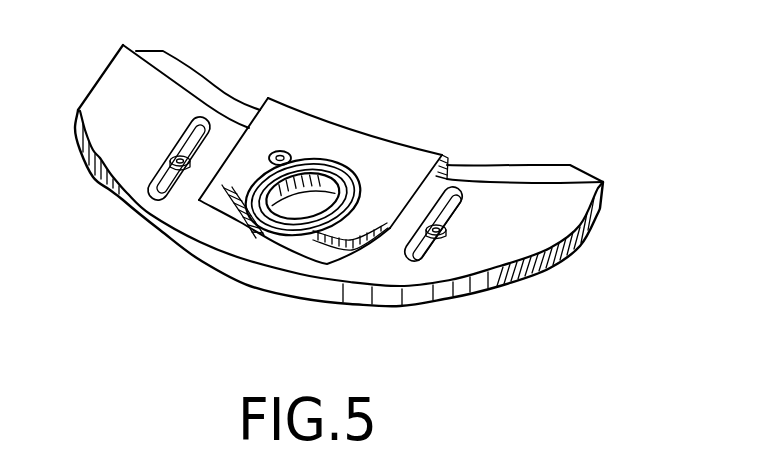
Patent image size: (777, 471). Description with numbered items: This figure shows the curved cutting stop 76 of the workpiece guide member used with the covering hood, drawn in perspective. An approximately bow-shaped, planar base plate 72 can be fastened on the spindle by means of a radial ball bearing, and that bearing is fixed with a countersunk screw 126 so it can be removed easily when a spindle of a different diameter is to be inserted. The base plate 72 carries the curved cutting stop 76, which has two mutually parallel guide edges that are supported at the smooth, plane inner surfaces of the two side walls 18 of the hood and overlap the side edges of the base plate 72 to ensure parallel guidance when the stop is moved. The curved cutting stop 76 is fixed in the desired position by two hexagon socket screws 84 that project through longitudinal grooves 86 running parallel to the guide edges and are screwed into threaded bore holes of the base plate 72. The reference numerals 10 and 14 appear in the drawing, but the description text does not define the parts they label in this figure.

The mounting assembly 10 is at (143, 263).
The bearing 14 is at (350, 177).
The side wall 18 is at (594, 218).
The base plate 72 is at (543, 170).
The curved cutting stop 76 is at (237, 277).
The hexagon socket screw 84 is at (446, 240).
The longitudinal groove 86 is at (458, 188).
The countersunk screw 126 is at (281, 150).